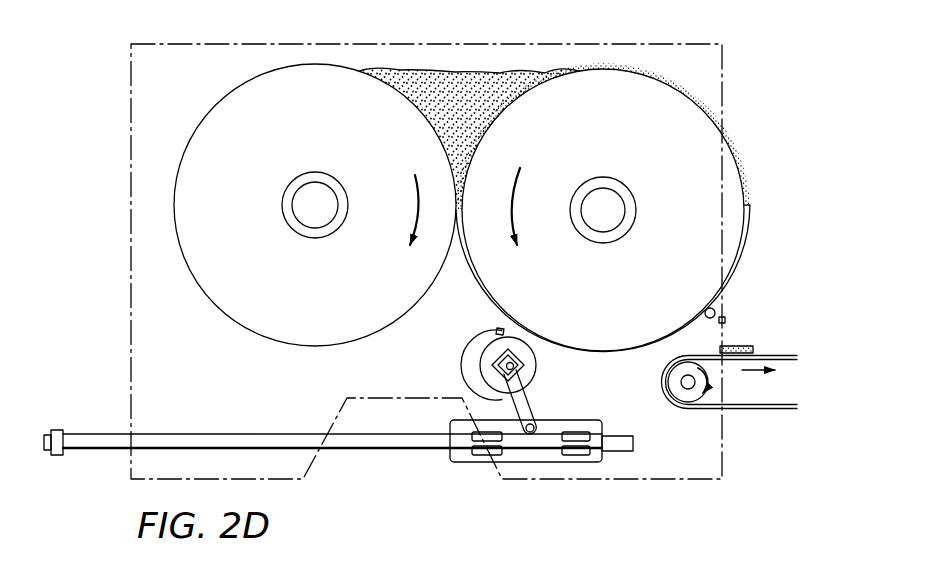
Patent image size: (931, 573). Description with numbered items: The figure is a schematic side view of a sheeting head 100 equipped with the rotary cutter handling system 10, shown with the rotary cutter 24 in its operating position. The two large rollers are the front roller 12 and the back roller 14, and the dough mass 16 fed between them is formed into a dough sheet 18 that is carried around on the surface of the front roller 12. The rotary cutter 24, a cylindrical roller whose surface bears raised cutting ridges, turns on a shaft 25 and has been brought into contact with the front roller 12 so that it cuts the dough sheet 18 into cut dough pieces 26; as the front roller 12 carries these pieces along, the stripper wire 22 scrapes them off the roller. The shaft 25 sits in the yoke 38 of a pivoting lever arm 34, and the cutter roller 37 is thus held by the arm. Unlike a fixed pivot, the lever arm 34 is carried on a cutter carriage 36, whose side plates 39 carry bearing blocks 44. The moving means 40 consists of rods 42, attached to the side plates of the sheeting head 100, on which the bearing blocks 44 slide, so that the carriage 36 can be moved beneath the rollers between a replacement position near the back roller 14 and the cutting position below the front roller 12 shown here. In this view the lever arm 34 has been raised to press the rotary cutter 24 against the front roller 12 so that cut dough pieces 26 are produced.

The sheeting head 100 is at (724, 88).
The rotary cutter handling system 10 is at (682, 511).
The front roller 12 is at (676, 62).
The back roller 14 is at (211, 107).
The powder supply 16 is at (458, 72).
The dough sheet 18 is at (476, 288).
The stripper wire 22 is at (709, 311).
The rotary cutter 24 is at (494, 338).
The shaft 25 is at (490, 360).
The cut dough pieces 26 is at (742, 346).
The lever arm 34 is at (527, 407).
The cutter carriage 36 is at (535, 467).
The transfer roller 37 is at (527, 352).
The yoke 38 is at (498, 368).
The side plates of the cutter carriage 39 is at (591, 421).
The moving means 40 is at (381, 459).
The rods 42 is at (262, 434).
The bearing blocks 44 is at (471, 462).